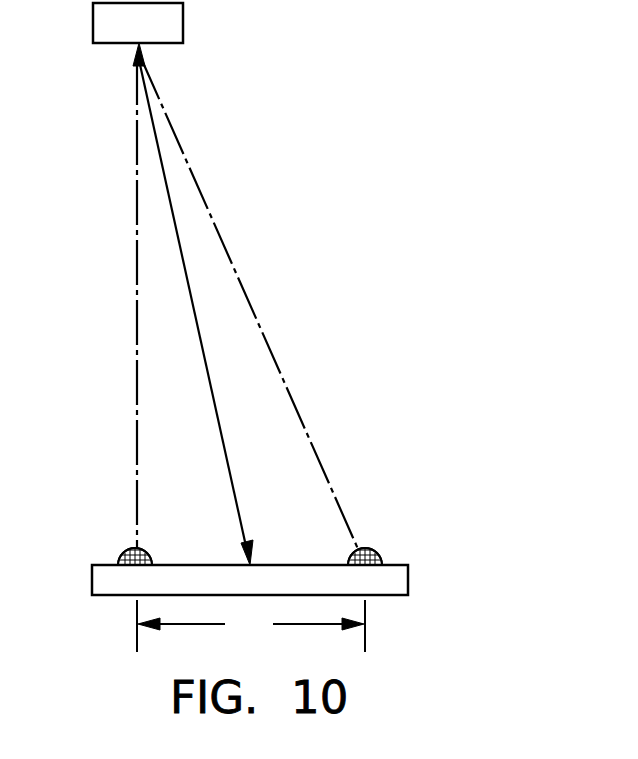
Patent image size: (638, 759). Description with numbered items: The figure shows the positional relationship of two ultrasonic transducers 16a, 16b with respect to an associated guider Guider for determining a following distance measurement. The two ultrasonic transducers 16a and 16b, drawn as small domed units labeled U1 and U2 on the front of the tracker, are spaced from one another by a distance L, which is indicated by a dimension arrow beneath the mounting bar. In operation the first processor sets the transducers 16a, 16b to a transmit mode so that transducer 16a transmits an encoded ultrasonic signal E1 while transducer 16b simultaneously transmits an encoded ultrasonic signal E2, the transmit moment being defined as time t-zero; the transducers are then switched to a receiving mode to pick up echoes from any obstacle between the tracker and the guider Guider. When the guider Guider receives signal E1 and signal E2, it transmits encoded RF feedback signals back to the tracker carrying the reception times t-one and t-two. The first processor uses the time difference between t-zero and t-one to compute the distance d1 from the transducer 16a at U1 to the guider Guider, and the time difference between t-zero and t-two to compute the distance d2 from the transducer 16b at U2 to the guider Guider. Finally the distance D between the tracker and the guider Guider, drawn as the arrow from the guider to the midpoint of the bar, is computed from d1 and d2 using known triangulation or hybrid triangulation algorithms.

The ultrasonic transducer 16a is at (143, 549).
The ultrasonic transducer 16b is at (373, 549).
The receiver unit 1 U1 is at (118, 546).
The receiver unit 2 U2 is at (385, 550).
The guider Guider is at (138, 23).
The distance d1 is at (116, 304).
The distance d2 is at (249, 303).
The distance D is at (196, 312).
The distance L is at (251, 626).